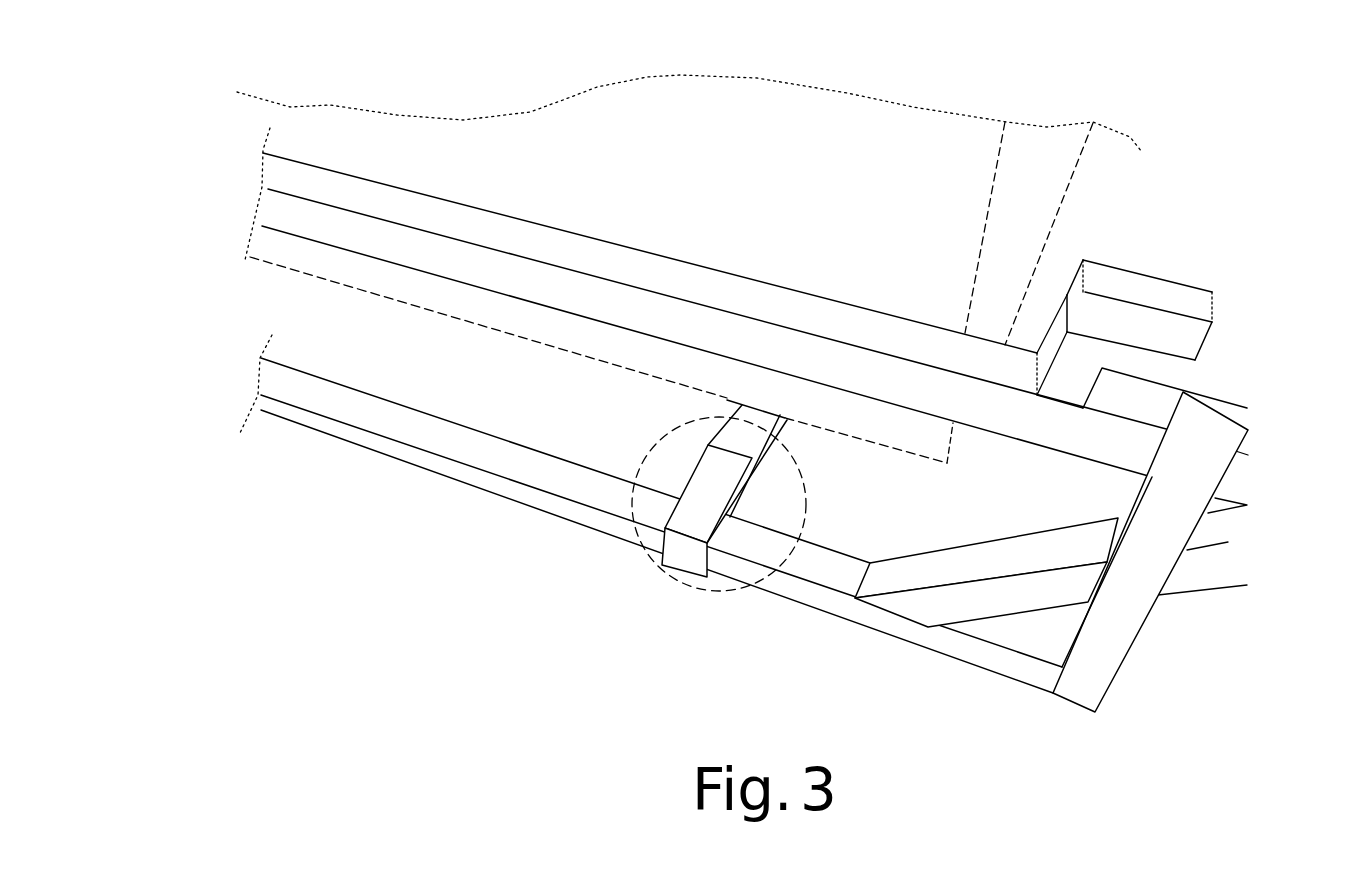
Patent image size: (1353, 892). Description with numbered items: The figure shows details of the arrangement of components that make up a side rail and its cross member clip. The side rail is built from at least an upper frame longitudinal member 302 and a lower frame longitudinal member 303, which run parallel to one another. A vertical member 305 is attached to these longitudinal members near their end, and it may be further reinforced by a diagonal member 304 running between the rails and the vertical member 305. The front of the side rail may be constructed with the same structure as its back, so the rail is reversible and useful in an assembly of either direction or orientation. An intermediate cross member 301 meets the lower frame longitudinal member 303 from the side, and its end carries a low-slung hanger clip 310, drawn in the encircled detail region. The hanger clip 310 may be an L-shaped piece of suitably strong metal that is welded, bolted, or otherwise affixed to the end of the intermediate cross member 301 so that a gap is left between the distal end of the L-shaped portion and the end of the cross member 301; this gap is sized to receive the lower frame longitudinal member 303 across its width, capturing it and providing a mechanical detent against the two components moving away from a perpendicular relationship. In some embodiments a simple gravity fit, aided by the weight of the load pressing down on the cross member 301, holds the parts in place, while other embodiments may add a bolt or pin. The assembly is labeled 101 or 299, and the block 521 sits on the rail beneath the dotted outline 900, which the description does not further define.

The robot frame 101 is at (208, 305).
The frame assembly 299 is at (717, 387).
The intermediate cross member 301 is at (685, 488).
The upper frame longitudinal member 302 is at (746, 251).
The lower frame longitudinal member 303 is at (651, 514).
The diagonal member 304 is at (1043, 557).
The vertical member 305 is at (1142, 521).
The hanger clip 310 is at (709, 539).
The mounting block 521 is at (1199, 289).
The robot body 900 is at (888, 183).